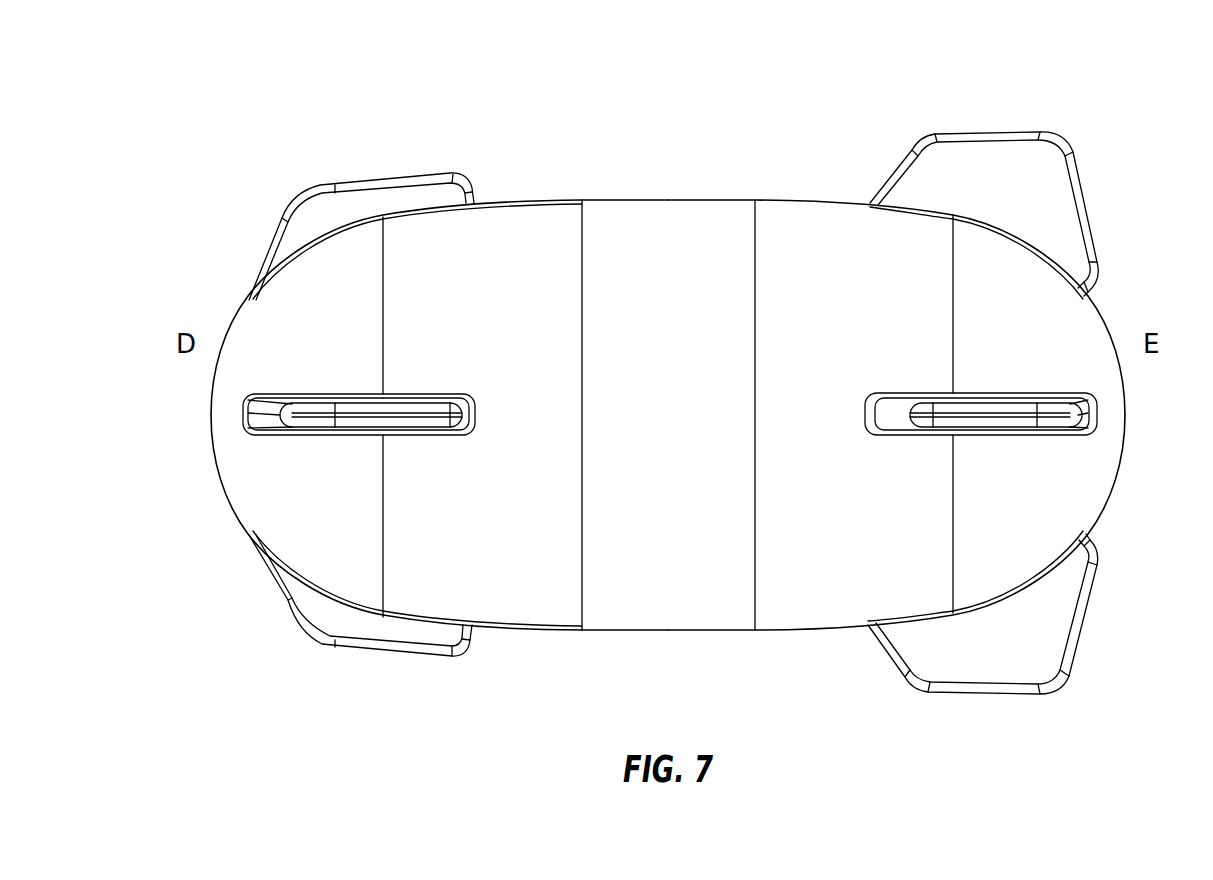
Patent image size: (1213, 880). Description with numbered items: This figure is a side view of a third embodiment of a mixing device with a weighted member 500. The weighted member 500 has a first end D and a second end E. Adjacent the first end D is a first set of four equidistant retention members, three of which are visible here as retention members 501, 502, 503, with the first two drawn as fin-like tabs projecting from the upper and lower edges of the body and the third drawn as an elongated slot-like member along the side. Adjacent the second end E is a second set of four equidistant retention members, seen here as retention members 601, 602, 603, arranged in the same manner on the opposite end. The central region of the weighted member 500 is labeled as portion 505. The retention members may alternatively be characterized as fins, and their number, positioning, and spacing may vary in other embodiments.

The weighted member 500 is at (1105, 83).
The retention member 501 is at (313, 217).
The retention member 502 is at (290, 420).
The retention member 503 is at (313, 612).
The central portion 505 is at (635, 223).
The retention member 601 is at (1057, 203).
The retention member 602 is at (1047, 420).
The retention member 603 is at (1057, 626).